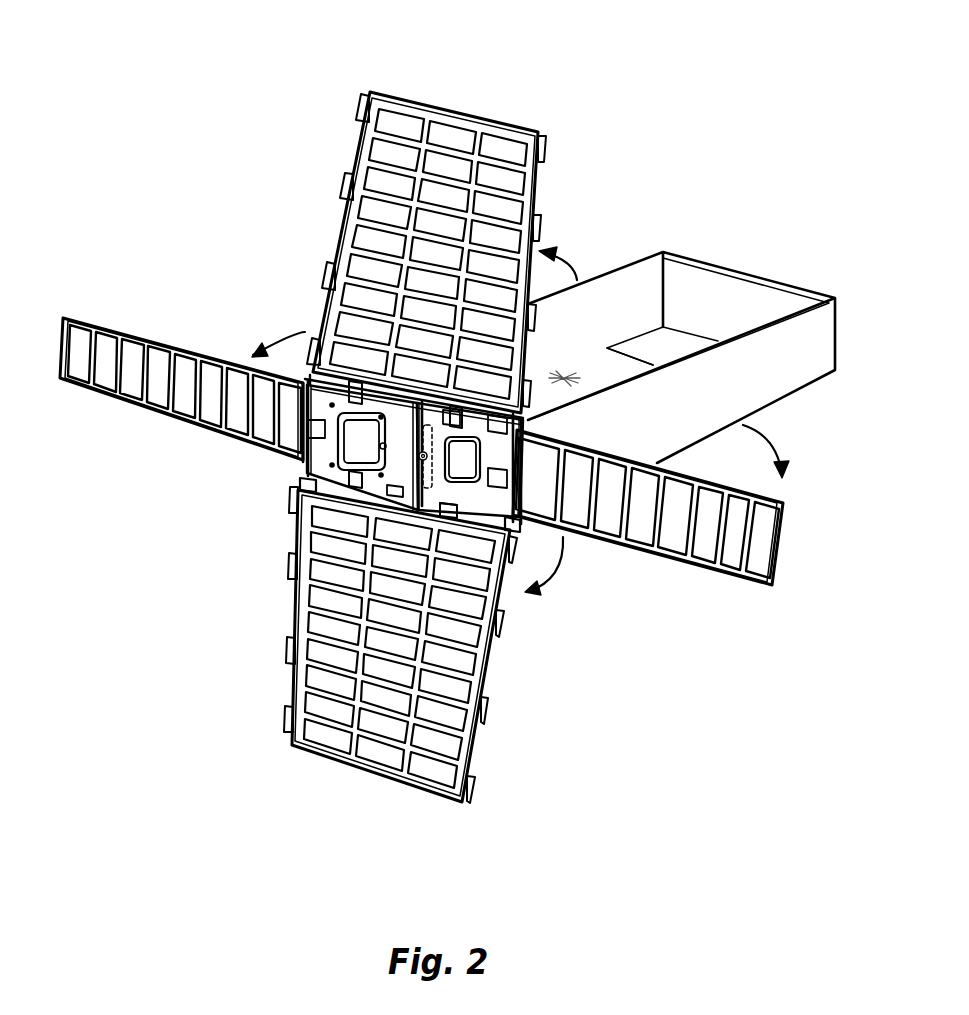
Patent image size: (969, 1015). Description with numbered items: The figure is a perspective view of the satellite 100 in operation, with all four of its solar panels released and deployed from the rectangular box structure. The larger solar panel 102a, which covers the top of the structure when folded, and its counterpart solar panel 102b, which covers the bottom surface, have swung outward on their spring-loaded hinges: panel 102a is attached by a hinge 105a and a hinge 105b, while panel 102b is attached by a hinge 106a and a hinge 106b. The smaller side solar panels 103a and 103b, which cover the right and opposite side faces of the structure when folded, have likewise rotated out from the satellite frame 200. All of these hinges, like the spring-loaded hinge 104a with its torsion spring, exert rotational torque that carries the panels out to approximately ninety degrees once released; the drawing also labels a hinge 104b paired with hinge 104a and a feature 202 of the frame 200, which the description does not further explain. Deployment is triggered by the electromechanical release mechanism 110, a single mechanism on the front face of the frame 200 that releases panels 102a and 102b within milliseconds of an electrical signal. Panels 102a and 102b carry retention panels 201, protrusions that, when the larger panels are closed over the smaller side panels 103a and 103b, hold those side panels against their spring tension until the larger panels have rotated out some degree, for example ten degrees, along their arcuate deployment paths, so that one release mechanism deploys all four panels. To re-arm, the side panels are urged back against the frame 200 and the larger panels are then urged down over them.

The satellite 100 is at (229, 108).
The solar panel 102a is at (455, 105).
The solar panel 102b is at (350, 785).
The solar panel 103a is at (653, 560).
The solar panel 103b is at (177, 343).
The hinge 104a is at (521, 473).
The second body portion 104b is at (307, 413).
The hinge 105a is at (337, 368).
The hinge 105b is at (538, 332).
The hinge 106a is at (297, 484).
The hinge 106b is at (467, 523).
The electromechanical release mechanism 110 is at (527, 443).
The frame 200 is at (787, 281).
The retention panels 201 is at (541, 227).
The deployer interior 202 is at (630, 360).